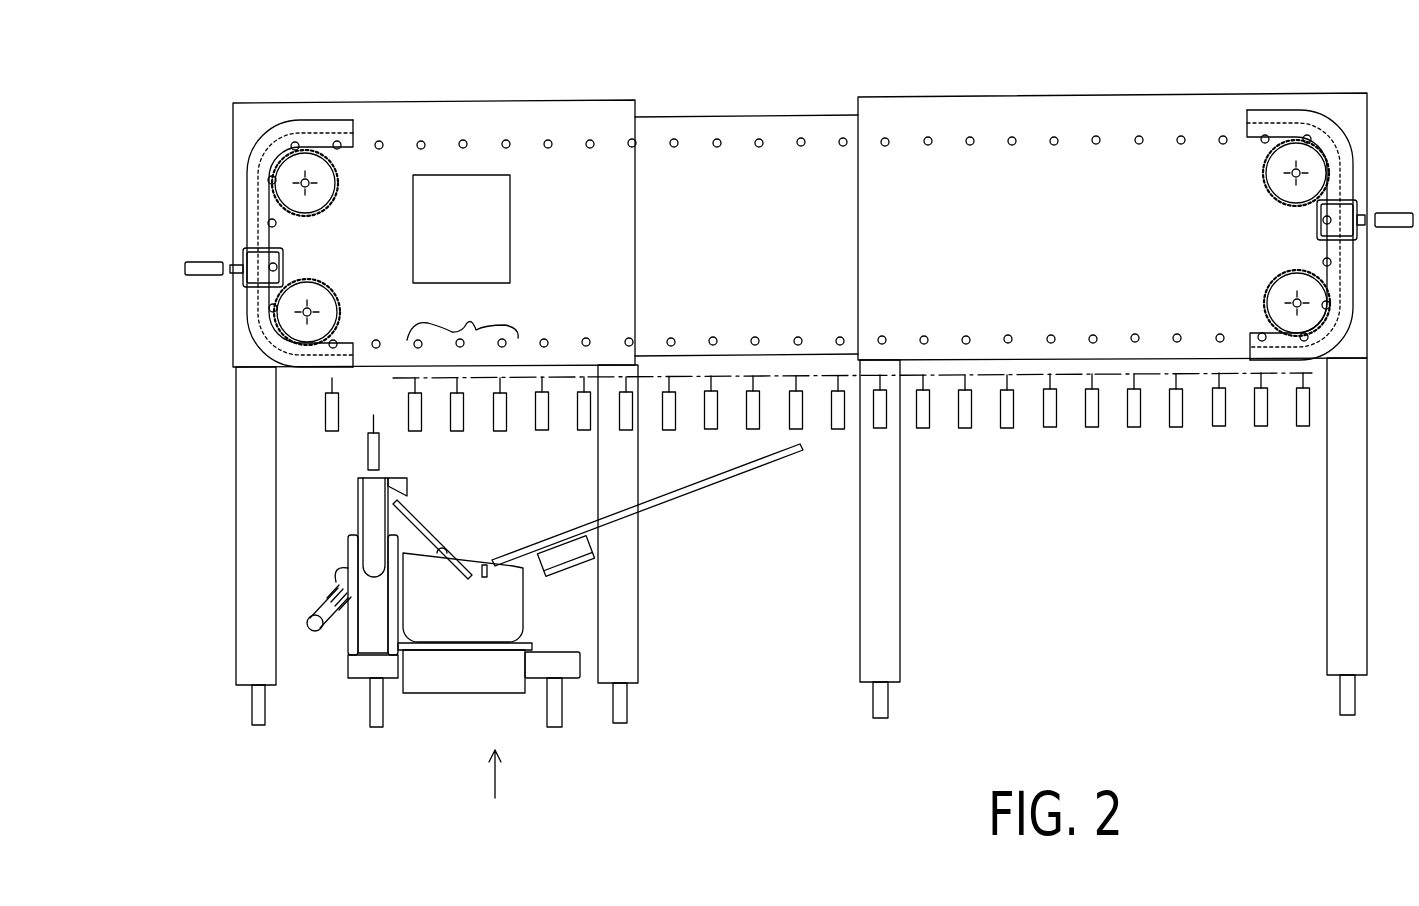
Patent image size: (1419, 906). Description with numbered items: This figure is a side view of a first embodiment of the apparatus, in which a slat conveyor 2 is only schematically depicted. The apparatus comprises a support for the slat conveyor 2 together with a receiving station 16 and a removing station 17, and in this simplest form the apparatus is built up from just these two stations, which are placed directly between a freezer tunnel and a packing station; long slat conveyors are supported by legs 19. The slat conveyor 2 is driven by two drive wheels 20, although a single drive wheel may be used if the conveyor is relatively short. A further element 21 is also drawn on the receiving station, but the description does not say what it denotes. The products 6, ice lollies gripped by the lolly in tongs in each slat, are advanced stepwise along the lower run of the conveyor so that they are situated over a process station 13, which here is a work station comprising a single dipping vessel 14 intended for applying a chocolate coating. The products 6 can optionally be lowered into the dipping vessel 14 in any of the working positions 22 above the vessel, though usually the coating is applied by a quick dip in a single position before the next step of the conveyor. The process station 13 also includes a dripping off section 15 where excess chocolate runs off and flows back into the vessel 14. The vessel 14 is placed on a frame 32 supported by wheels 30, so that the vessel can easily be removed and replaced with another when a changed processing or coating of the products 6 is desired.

The slat conveyor 2 is at (1190, 373).
The products 6 is at (213, 267).
The process station 13 is at (427, 619).
The dipping vessel 14 is at (513, 601).
The dripping off section 15 is at (697, 491).
The receiving station 16 is at (484, 80).
The removing station 17 is at (1120, 77).
The legs 19 is at (253, 498).
The drive wheels 20 is at (312, 157).
The control unit 21 is at (497, 193).
The working positions 22 is at (487, 316).
The wheels 30 is at (384, 721).
The frame 32 is at (357, 667).